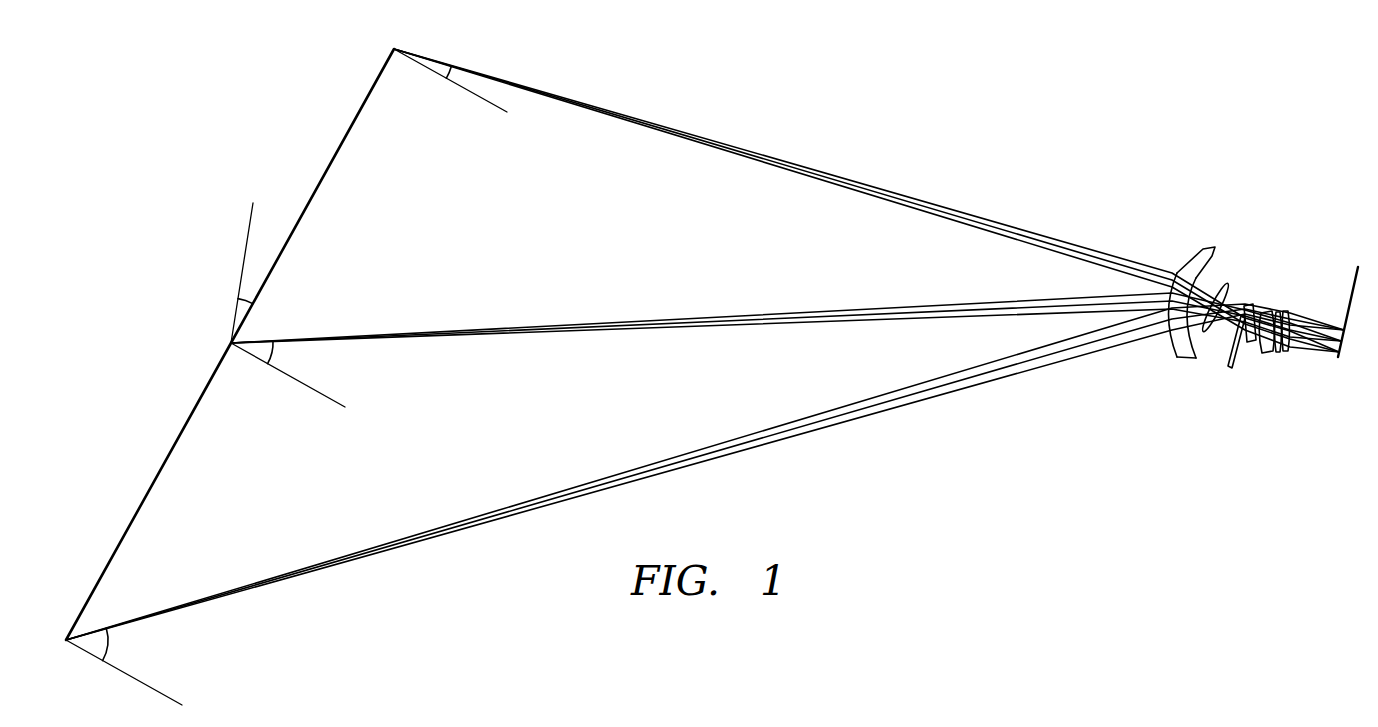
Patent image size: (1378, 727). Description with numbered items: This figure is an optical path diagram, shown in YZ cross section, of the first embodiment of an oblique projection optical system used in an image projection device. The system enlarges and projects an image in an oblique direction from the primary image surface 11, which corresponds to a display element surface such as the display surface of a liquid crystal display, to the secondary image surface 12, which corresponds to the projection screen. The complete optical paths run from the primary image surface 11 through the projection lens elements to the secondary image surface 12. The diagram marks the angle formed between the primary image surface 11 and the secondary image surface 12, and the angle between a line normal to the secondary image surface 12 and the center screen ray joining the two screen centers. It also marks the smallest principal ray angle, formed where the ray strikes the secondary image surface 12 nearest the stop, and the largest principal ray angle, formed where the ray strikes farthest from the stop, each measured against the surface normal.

The primary image surface 11 is at (1352, 292).
The secondary image surface 12 is at (363, 102).